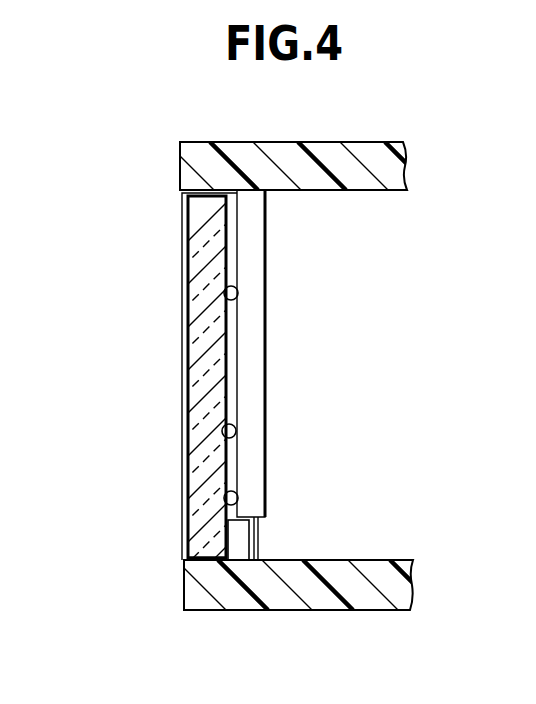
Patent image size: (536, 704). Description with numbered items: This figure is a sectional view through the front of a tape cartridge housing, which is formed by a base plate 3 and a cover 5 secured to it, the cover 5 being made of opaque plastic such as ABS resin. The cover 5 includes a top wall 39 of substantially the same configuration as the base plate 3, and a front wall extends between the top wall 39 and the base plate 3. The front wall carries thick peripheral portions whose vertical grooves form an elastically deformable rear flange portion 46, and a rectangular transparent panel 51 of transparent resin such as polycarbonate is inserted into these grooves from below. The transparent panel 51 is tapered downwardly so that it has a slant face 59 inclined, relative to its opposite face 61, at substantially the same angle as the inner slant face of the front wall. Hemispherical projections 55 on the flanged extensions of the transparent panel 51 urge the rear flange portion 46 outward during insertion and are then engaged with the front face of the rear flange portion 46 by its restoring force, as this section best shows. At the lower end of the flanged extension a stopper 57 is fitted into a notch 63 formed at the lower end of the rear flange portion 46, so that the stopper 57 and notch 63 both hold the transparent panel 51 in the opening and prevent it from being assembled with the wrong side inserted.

The base plate 3 is at (372, 566).
The cover 5 is at (334, 146).
The top wall 39 is at (245, 156).
The rear flange portion 46 is at (255, 345).
The transparent panel 51 is at (202, 246).
The hemispherical projection 55 is at (226, 294).
The stopper 57 is at (222, 546).
The slant face 59 is at (224, 436).
The opposite face 61 is at (186, 390).
The notch 63 is at (252, 544).